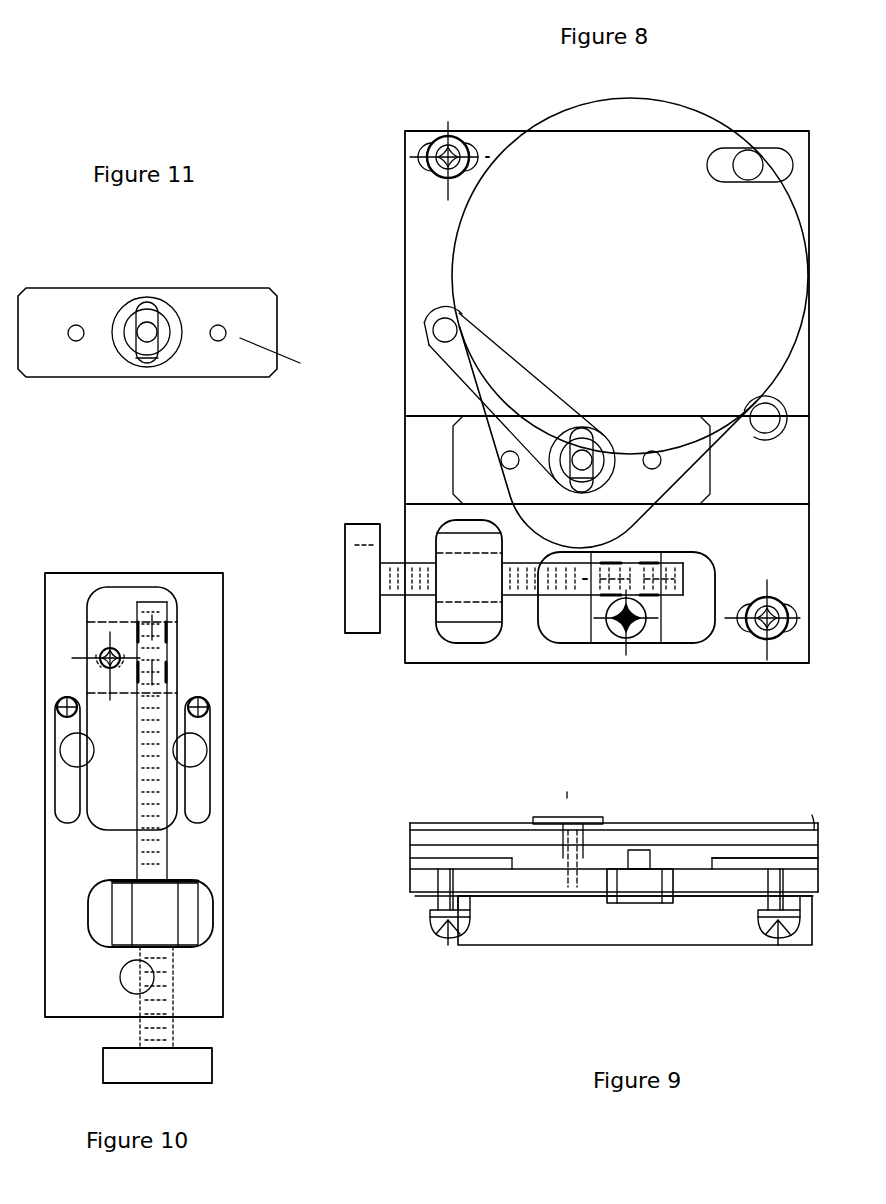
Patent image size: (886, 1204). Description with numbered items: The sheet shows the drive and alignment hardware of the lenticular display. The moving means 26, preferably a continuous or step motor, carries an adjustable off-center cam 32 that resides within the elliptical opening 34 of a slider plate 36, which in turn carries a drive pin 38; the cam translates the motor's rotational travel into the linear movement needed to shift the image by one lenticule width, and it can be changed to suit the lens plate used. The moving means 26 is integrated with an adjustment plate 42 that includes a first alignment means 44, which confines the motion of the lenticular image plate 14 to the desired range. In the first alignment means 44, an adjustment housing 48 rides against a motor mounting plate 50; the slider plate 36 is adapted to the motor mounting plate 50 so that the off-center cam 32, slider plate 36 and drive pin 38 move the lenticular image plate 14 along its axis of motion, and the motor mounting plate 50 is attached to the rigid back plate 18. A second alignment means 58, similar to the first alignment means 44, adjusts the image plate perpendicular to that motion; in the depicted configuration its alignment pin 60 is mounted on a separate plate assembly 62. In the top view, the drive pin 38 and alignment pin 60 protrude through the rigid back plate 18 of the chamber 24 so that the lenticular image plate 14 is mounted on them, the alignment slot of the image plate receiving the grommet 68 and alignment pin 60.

In FIG. 9, the lenticular image plate 14 is at (423, 825).
In FIG. 9, the rigid back plate 18 is at (810, 852).
In FIG. 9, the chamber 24 is at (485, 837).
In FIG. 8, the moving means 26 is at (683, 145).
In FIG. 9, the moving means 26 is at (748, 978).
In FIG. 8, the off-center cam 32 is at (575, 455).
In FIG. 11, the off-center cam 32 is at (155, 330).
In FIG. 8, the elliptical opening 34 is at (568, 479).
In FIG. 11, the elliptical opening 34 is at (153, 359).
In FIG. 8, the slider plate 36 is at (473, 452).
In FIG. 8, the drive pin 38 is at (510, 460).
In FIG. 9, the drive pin 38 is at (553, 823).
In FIG. 11, the drive pin 38 is at (78, 331).
In FIG. 8, the adjustment plate 42 is at (727, 650).
In FIG. 9, the adjustment plate 42 is at (735, 878).
In FIG. 8, the first alignment means 44 is at (509, 677).
In FIG. 8, the adjustment housing 48 is at (453, 613).
In FIG. 8, the motor mounting plate 50 is at (692, 613).
In FIG. 9, the motor mounting plate 50 is at (722, 862).
In FIG. 10, the second alignment means 58 is at (247, 975).
In FIG. 10, the alignment pin 60 is at (130, 977).
In FIG. 10, the separate plate assembly 62 is at (122, 733).
In FIG. 9, the grommet 68 is at (580, 818).